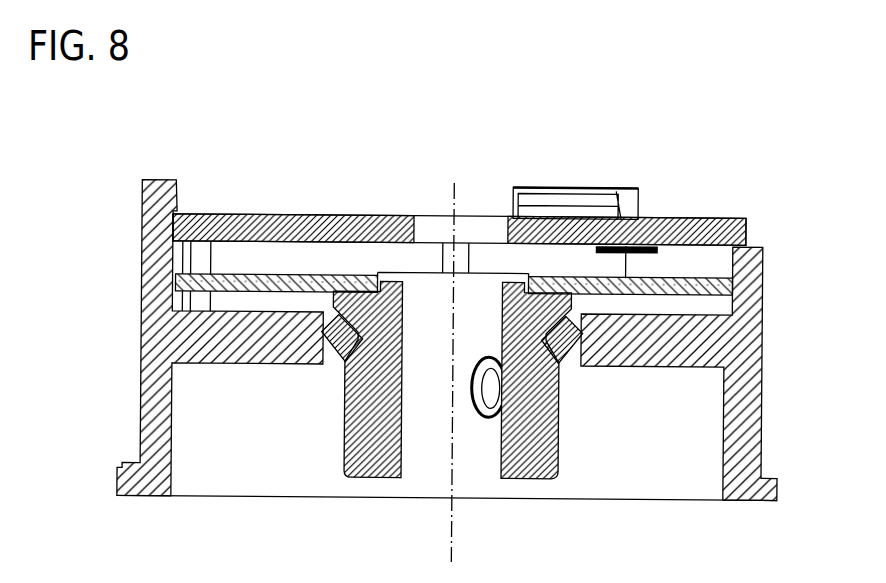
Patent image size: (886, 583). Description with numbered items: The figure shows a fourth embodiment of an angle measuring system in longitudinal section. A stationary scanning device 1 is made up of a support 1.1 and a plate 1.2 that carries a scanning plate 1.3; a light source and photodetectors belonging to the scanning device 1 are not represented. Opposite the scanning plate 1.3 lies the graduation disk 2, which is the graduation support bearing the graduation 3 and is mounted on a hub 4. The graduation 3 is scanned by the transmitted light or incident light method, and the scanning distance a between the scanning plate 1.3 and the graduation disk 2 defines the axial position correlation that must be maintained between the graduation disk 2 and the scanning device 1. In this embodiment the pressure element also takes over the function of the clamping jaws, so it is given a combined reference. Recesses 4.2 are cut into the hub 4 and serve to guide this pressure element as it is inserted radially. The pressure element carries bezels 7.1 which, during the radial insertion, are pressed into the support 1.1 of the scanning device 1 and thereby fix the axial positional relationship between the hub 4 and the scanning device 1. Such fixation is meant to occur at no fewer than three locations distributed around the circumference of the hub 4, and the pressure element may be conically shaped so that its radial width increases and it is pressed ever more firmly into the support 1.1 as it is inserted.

The scanning device 1 is at (499, 307).
The support 1.1 is at (762, 374).
The plate 1.2 is at (714, 217).
The scanning plate 1.3 is at (655, 218).
The graduation disk 2 is at (732, 277).
The graduation 3 is at (293, 272).
The hub 4 is at (514, 479).
The recesses 4.2 is at (358, 342).
The bezels 7.1 is at (322, 342).